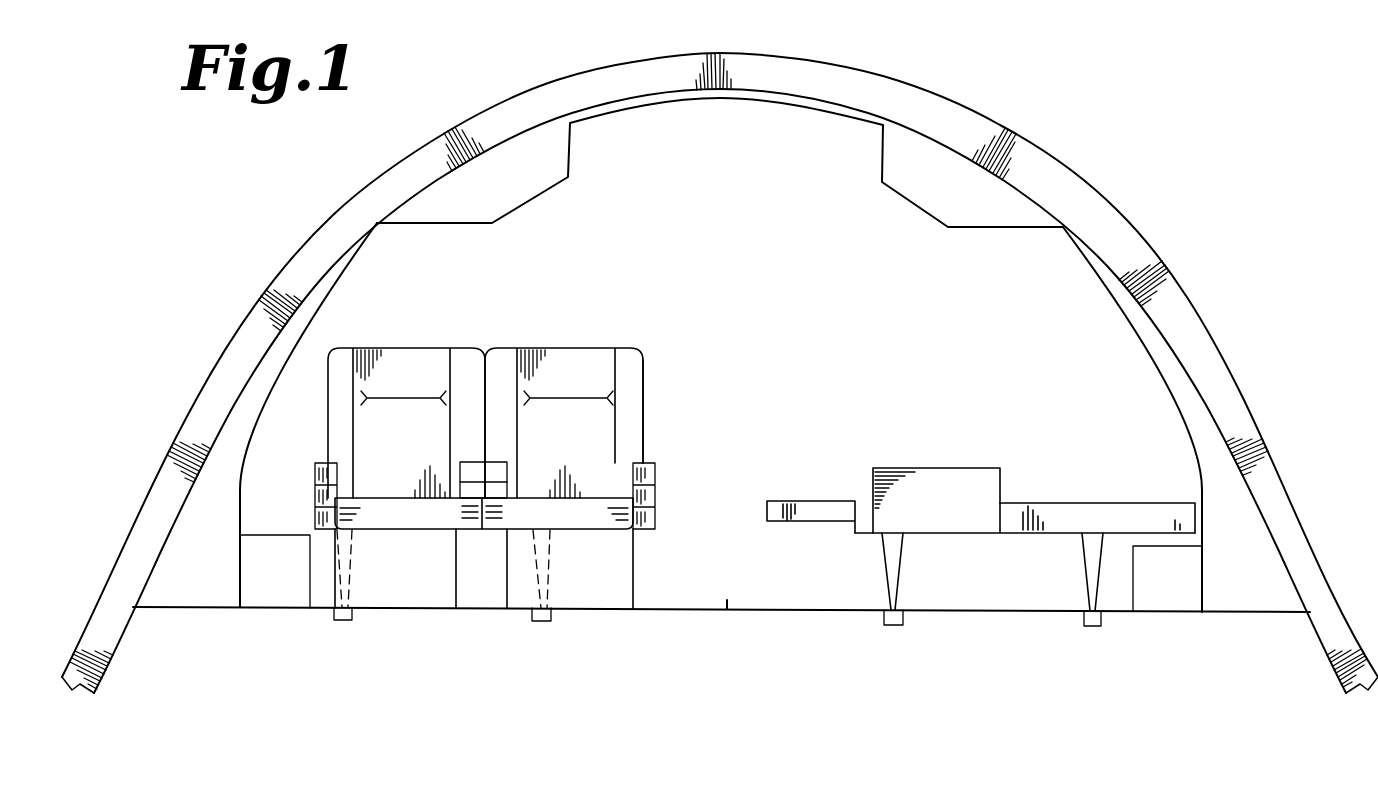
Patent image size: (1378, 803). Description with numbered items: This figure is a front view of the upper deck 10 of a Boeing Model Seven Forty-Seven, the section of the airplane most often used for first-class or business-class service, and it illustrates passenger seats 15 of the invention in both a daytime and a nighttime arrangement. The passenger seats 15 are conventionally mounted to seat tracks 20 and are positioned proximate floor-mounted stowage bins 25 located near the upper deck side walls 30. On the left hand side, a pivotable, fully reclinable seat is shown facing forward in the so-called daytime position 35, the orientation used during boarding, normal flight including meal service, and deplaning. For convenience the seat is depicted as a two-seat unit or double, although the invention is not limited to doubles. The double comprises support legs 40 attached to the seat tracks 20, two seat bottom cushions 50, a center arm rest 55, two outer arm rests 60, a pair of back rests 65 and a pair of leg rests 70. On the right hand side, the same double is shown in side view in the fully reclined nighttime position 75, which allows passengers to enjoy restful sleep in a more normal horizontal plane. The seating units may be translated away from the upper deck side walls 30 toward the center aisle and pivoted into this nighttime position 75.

The upper deck 10 is at (1186, 322).
The passenger seats 15 is at (446, 345).
The seat tracks 20 is at (342, 626).
The floor-mounted stowage bins 25 is at (266, 600).
The upper deck side walls 30 is at (238, 517).
The daytime position 35 is at (647, 358).
The support legs 40 is at (358, 570).
The seat bottom cushions 50 is at (384, 492).
The center arm rest 55 is at (508, 456).
The outer arm rests 60 is at (312, 468).
The back rests 65 is at (623, 346).
The leg rests 70 is at (799, 524).
The nighttime position 75 is at (1003, 476).